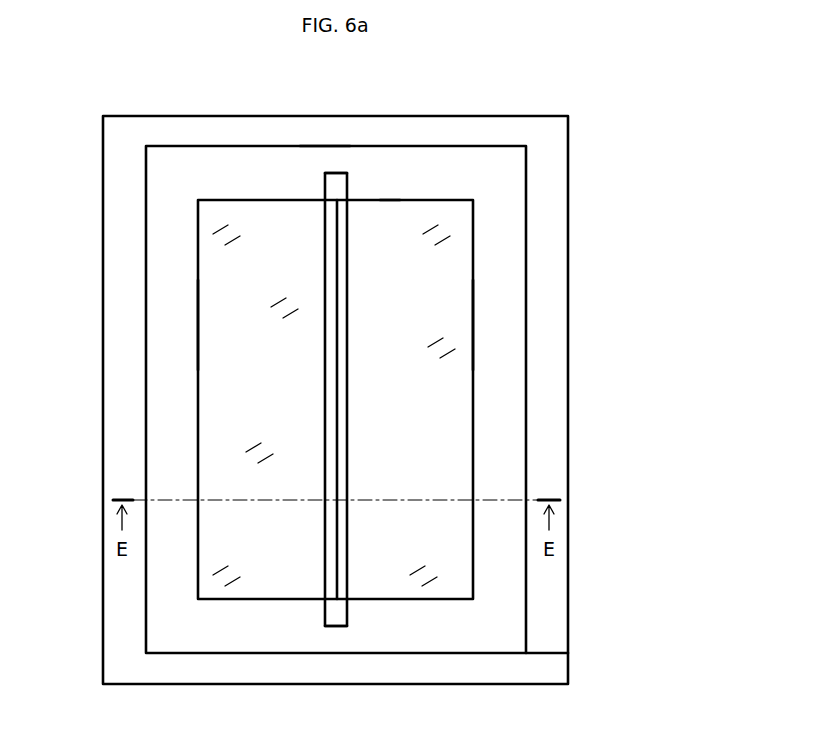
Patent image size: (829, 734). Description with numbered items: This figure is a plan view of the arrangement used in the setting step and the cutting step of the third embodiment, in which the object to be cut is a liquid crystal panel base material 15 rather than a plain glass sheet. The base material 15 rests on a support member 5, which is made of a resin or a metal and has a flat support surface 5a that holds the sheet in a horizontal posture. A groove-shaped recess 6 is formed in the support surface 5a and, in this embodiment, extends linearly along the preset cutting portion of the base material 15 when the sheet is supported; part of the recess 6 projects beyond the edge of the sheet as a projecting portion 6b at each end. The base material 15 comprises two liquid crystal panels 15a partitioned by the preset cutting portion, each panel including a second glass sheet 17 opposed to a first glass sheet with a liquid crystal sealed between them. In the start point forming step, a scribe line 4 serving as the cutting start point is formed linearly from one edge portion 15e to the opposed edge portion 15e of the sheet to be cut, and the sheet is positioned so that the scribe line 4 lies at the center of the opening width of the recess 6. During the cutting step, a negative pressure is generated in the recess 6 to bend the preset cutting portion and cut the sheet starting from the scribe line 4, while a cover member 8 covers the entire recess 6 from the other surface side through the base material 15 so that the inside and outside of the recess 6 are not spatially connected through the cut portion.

The support member 5 is at (600, 200).
The support surface 5a is at (548, 620).
The liquid crystal panel base material 15 is at (438, 188).
The edge portion 15e is at (388, 198).
The liquid crystal panel 15a is at (196, 325).
The second glass sheet 17 is at (258, 220).
The scribe line 4 is at (338, 383).
The recess 6 is at (340, 445).
The projecting portion 6b is at (333, 180).
The cover member 8 is at (325, 142).